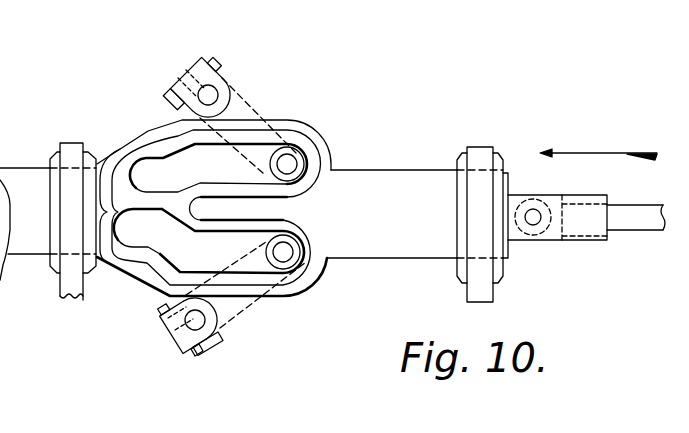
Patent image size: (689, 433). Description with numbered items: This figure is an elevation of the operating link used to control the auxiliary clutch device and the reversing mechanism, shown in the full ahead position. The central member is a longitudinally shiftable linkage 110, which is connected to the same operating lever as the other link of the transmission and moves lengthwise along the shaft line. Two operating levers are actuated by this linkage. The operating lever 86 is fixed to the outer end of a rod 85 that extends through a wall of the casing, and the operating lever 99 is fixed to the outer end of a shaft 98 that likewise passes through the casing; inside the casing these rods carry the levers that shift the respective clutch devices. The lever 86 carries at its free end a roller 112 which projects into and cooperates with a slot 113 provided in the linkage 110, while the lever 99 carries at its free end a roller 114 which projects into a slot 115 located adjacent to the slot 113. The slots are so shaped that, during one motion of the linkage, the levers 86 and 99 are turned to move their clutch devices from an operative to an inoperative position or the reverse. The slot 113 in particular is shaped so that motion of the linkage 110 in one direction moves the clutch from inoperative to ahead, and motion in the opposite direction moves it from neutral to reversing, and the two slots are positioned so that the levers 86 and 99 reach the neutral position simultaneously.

The rod 85 is at (197, 322).
The operating lever 86 is at (232, 308).
The shaft 98 is at (209, 94).
The operating lever 99 is at (235, 108).
The longitudinally shiftable linkage 110 is at (392, 214).
The roller 112 is at (298, 254).
The slot 113 is at (173, 252).
The roller 114 is at (300, 161).
The slot 115 is at (150, 166).